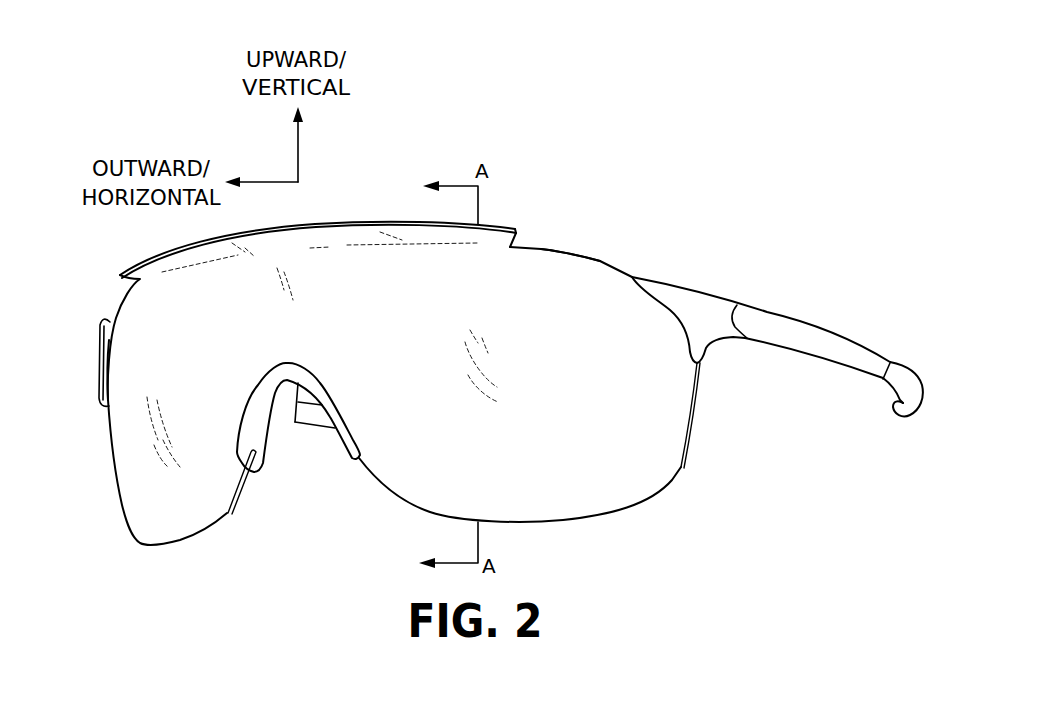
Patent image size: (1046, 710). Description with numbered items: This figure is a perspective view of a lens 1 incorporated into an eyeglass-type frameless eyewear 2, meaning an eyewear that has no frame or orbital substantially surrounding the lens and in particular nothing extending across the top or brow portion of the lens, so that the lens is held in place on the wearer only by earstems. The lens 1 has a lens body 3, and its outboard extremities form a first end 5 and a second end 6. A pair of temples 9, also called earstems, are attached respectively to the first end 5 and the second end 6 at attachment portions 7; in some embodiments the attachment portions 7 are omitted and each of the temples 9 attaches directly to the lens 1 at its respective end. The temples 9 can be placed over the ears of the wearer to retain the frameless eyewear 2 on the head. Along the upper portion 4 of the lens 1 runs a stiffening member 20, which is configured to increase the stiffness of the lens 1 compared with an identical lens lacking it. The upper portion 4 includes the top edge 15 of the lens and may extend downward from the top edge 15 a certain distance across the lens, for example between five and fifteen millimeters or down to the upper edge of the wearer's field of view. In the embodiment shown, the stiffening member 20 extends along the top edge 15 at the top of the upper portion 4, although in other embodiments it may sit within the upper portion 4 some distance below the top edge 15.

The lens 1 is at (716, 516).
The frameless eyewear 2 is at (738, 228).
The lens body 3 is at (393, 450).
The upper portion 4 is at (560, 264).
The first end 5 is at (110, 467).
The second end 6 is at (698, 432).
The attachment portions 7 is at (712, 302).
The temples 9 is at (830, 331).
The top edge 15 is at (541, 247).
The stiffening member 20 is at (413, 224).